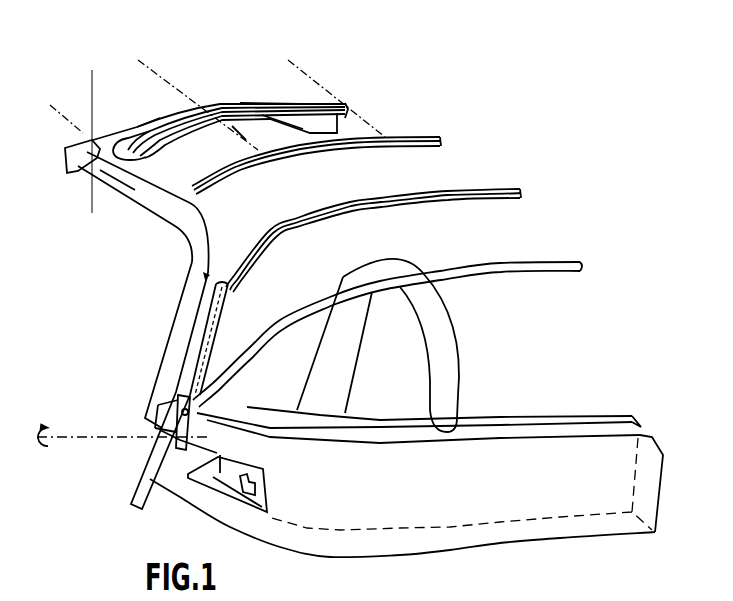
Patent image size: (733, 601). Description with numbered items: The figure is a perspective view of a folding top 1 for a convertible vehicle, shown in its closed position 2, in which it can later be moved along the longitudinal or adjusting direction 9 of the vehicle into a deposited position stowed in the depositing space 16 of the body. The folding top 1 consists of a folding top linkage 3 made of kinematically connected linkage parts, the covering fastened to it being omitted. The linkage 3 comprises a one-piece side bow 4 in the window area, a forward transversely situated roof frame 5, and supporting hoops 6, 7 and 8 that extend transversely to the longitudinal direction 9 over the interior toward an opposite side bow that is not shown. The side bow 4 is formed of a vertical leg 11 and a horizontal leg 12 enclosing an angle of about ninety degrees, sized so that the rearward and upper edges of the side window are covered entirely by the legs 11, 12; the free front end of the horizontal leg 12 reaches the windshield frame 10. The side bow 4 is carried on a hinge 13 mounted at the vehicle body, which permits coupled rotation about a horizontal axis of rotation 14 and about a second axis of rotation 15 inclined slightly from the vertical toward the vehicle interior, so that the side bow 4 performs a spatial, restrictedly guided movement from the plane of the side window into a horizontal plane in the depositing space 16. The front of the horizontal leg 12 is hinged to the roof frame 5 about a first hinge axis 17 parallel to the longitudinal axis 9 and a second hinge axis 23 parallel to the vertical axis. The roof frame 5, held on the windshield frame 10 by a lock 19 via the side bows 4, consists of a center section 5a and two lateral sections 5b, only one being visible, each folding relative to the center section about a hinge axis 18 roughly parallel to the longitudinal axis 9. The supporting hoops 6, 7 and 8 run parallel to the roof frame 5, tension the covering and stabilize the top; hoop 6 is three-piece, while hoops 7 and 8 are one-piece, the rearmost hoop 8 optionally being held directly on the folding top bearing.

The folding top 1 is at (620, 180).
The closed position 2 is at (360, 104).
The folding top linkage 3 is at (495, 160).
The side bow 4 is at (170, 239).
The roof frame 5 is at (202, 90).
The center section 5a is at (250, 103).
The lateral section 5b is at (141, 123).
The supporting hoop 6 is at (240, 164).
The supporting hoop 7 is at (301, 228).
The supporting hoop 8 is at (280, 325).
The longitudinal direction 9 is at (328, 175).
The windshield frame 10 is at (238, 131).
The vertical leg 11 is at (177, 327).
The horizontal leg 12 is at (128, 190).
The hinge 13 is at (158, 425).
The horizontal axis of rotation 14 is at (78, 443).
The axis of rotation 15 is at (212, 304).
The depositing space 16 is at (660, 415).
The first hinge axis 17 is at (70, 113).
The hinge axis 18 is at (163, 80).
The lock 19 is at (140, 158).
The second hinge axis 23 is at (93, 181).